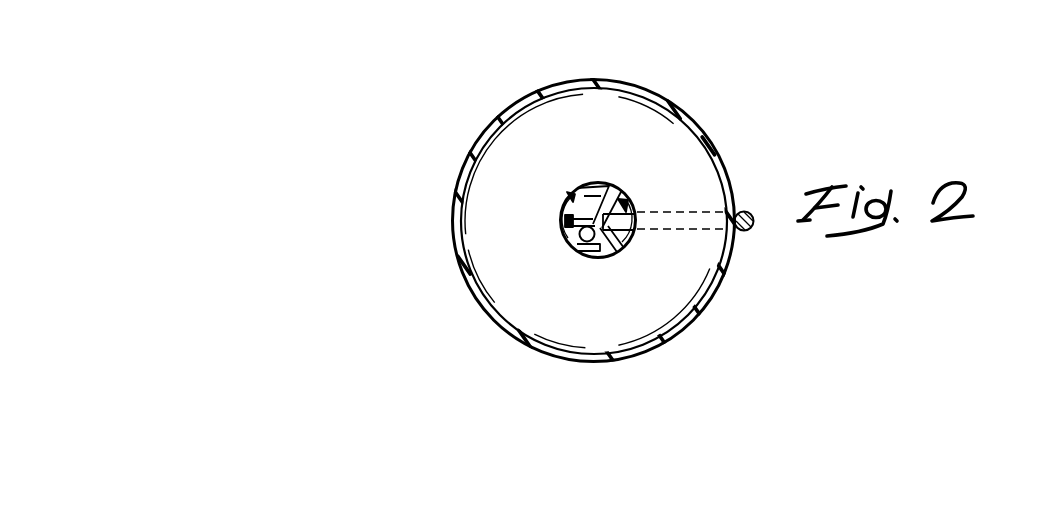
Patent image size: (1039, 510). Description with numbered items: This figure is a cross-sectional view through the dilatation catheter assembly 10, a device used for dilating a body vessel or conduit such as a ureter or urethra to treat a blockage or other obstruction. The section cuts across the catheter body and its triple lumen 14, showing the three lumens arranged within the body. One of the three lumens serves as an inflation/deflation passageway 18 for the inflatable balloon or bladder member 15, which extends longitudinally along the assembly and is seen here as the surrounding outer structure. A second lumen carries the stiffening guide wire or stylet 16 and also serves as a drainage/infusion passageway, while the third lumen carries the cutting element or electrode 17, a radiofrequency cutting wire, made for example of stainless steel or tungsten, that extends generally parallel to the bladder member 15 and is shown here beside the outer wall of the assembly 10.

The dilatation catheter assembly 10 is at (718, 97).
The triple lumen 14 is at (635, 202).
The inflatable balloon or bladder member 15 is at (613, 79).
The stiffening guide wire or stylet 16 is at (563, 238).
The cutting element or electrode 17 is at (748, 209).
The inflation/deflation passageway 18 is at (578, 205).